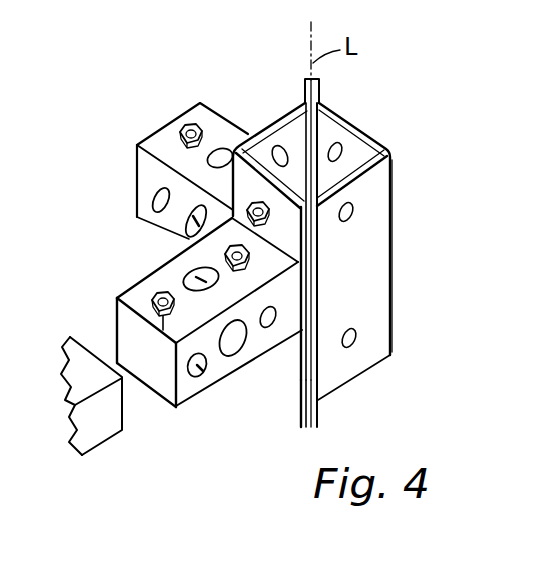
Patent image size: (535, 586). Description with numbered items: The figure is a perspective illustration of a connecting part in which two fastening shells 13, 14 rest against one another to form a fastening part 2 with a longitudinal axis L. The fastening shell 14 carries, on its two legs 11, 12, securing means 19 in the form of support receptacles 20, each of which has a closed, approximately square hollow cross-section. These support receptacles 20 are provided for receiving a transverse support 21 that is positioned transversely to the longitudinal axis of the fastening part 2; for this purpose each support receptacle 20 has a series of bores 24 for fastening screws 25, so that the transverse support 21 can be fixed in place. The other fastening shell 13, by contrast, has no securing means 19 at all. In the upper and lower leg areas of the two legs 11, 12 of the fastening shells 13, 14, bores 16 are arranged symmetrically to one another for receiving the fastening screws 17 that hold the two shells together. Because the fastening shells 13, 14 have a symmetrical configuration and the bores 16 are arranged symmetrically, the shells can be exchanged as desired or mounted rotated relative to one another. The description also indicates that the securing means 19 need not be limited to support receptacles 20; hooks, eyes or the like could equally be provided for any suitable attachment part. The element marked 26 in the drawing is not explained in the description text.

The fastening part 2 is at (376, 77).
The leg 11 is at (242, 136).
The leg 12 is at (276, 138).
The fastening shell 13 is at (393, 322).
The fastening shell 14 is at (298, 378).
The bores 16 is at (349, 202).
The fastening screws 17 is at (271, 220).
The securing means 19 is at (218, 106).
The support receptacle 20 is at (148, 174).
The transverse support 21 is at (100, 427).
The bores 24 is at (213, 381).
The fastening screws 25 is at (164, 330).
The guide pins 26 is at (185, 226).